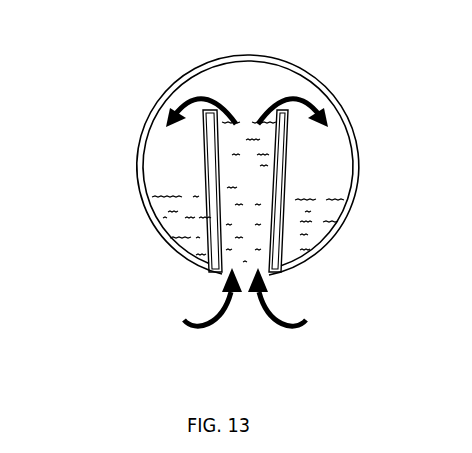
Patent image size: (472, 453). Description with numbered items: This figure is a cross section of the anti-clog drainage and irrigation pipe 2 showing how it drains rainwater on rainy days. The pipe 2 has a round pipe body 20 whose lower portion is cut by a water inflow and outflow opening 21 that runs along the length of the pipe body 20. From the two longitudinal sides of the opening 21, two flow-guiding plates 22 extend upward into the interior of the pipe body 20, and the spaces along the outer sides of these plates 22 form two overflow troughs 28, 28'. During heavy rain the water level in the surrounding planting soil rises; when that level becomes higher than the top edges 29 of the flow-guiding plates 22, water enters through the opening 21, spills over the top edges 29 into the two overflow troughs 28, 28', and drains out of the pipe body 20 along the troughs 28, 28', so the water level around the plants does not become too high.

The anti-clog drainage and irrigation pipe 2 is at (128, 71).
The pipe body 20 is at (127, 162).
The water inflow and outflow opening 21 is at (247, 324).
The flow-guiding plates 22 is at (210, 192).
The overflow trough 28 is at (133, 106).
The overflow trough 28' is at (336, 109).
The top edges 29 is at (295, 94).